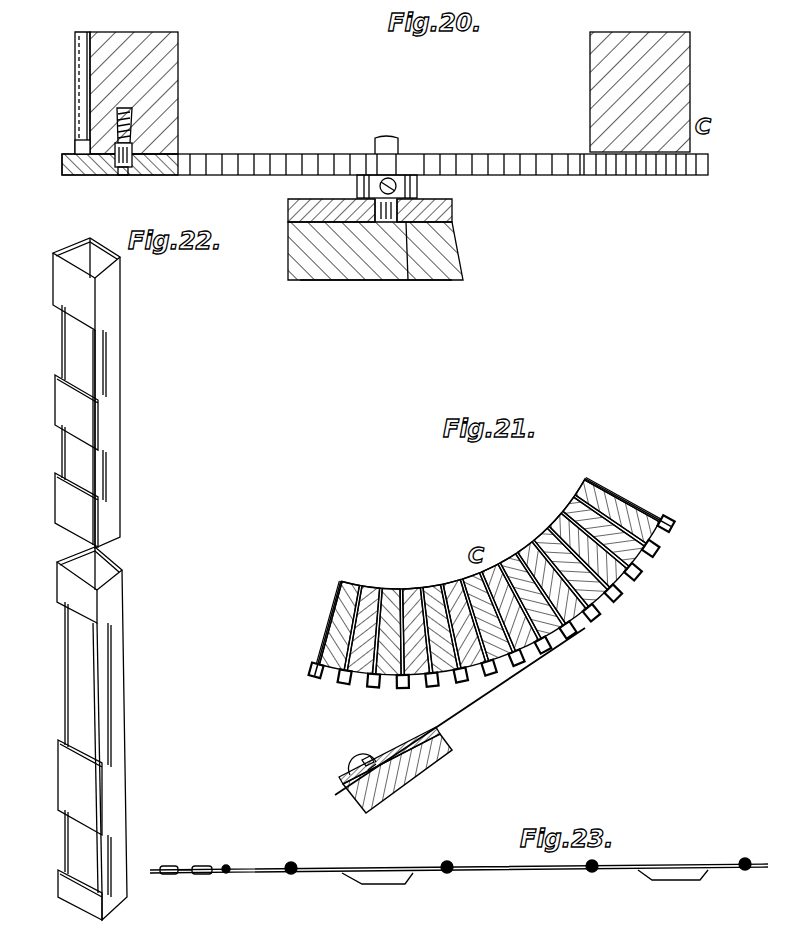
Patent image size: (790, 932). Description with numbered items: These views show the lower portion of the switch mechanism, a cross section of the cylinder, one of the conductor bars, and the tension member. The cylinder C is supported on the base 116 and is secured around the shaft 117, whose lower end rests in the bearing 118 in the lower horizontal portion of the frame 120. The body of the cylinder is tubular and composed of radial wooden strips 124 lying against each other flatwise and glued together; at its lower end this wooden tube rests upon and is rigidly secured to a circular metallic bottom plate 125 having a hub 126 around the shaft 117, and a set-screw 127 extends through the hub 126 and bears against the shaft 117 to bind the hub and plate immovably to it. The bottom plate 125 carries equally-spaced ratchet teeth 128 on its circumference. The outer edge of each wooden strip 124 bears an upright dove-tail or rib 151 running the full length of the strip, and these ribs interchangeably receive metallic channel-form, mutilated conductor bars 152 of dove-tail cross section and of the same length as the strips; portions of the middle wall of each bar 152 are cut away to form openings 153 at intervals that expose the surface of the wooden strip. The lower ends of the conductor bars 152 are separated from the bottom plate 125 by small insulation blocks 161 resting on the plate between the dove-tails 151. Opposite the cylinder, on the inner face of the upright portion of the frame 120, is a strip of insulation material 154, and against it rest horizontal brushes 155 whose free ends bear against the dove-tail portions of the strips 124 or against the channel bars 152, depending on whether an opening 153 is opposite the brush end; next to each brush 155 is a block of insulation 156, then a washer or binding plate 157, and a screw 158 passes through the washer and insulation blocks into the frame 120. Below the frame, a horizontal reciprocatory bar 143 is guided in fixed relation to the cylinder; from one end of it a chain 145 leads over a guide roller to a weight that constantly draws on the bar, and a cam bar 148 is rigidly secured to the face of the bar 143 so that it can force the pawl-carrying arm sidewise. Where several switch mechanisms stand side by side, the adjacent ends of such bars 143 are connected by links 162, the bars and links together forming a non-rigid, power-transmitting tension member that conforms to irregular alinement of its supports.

In FIG. 20, the base 116 is at (462, 262).
In FIG. 20, the shaft 117 is at (400, 145).
In FIG. 20, the bearing 118 is at (405, 281).
In FIG. 20, the frame 120 is at (452, 210).
In FIG. 21, the frame 120 is at (455, 772).
In FIG. 20, the wooden strips 124 is at (174, 108).
In FIG. 21, the wooden strips 124 is at (434, 583).
In FIG. 20, the bottom plate 125 is at (549, 167).
In FIG. 20, the hub 126 is at (418, 187).
In FIG. 20, the set-screw 127 is at (366, 186).
In FIG. 20, the ratchet teeth 128 is at (66, 174).
In FIG. 23, the reciprocatory bar 143 is at (459, 856).
In FIG. 23, the chain 145 is at (195, 880).
In FIG. 23, the cam bar 148 is at (378, 885).
In FIG. 21, the dove-tail rib 151 is at (572, 628).
In FIG. 20, the conductor bars 152 is at (76, 90).
In FIG. 22, the conductor bars 152 is at (107, 420).
In FIG. 21, the conductor bars 152 is at (602, 600).
In FIG. 22, the openings 153 is at (74, 460).
In FIG. 21, the strip of insulation material 154 is at (440, 735).
In FIG. 21, the brushes 155 is at (340, 790).
In FIG. 21, the block of insulation 156 is at (374, 763).
In FIG. 21, the washer or binding plate 157 is at (364, 758).
In FIG. 21, the screw 158 is at (356, 768).
In FIG. 20, the insulation blocks 161 is at (80, 148).
In FIG. 23, the links 162 is at (258, 870).